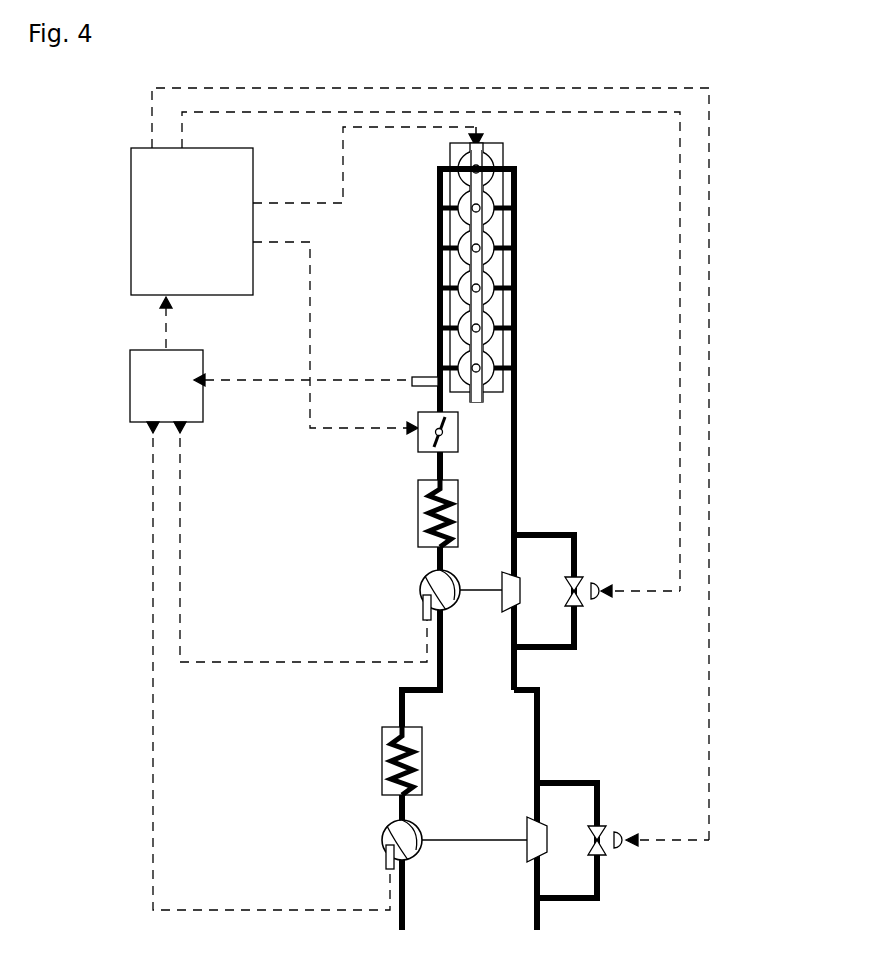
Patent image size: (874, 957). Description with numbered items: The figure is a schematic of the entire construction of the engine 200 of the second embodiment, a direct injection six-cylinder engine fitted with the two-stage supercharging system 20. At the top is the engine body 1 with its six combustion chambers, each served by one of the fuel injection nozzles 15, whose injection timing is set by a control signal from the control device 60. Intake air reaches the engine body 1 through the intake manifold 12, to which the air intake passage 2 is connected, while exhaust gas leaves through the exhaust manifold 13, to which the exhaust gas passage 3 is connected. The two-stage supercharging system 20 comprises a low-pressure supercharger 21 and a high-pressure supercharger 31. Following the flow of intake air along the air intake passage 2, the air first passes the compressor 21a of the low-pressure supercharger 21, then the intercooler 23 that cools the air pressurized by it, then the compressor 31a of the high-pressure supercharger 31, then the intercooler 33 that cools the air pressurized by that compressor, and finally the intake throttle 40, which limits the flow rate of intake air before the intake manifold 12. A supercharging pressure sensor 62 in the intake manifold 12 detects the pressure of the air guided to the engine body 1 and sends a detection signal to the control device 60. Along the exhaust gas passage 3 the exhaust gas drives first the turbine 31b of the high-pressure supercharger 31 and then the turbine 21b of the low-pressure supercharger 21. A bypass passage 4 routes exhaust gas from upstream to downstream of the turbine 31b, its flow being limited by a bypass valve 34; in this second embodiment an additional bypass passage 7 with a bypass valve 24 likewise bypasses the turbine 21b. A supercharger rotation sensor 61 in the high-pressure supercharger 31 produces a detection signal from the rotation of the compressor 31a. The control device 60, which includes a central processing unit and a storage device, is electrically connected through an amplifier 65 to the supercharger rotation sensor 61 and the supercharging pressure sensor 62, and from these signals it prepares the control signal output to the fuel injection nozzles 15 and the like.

The engine 200 is at (433, 465).
The engine body 1 is at (438, 152).
The fuel injection nozzles 15 is at (484, 166).
The intake manifold 12 is at (424, 270).
The exhaust manifold 13 is at (530, 272).
The supercharging pressure sensor 62 is at (418, 378).
The air intake passage 2 is at (424, 396).
The exhaust gas passage 3 is at (524, 398).
The intake throttle 40 is at (417, 432).
The intercooler 33 is at (417, 512).
The high-pressure supercharger 31 is at (330, 597).
The compressor 31a is at (421, 595).
The turbine 31b is at (520, 608).
The supercharger rotation sensor 61 is at (422, 622).
The bypass passage 4 is at (580, 550).
The bypass valve 34 is at (600, 600).
The two-stage supercharging system 20 is at (640, 728).
The intercooler 23 is at (381, 760).
The low-pressure supercharger 21 is at (302, 836).
The compressor 21a is at (382, 840).
The turbine 21b is at (540, 858).
The bypass passage 7 is at (605, 800).
The bypass valve 24 is at (636, 850).
The control device 60 is at (198, 244).
The amplifier 65 is at (177, 406).